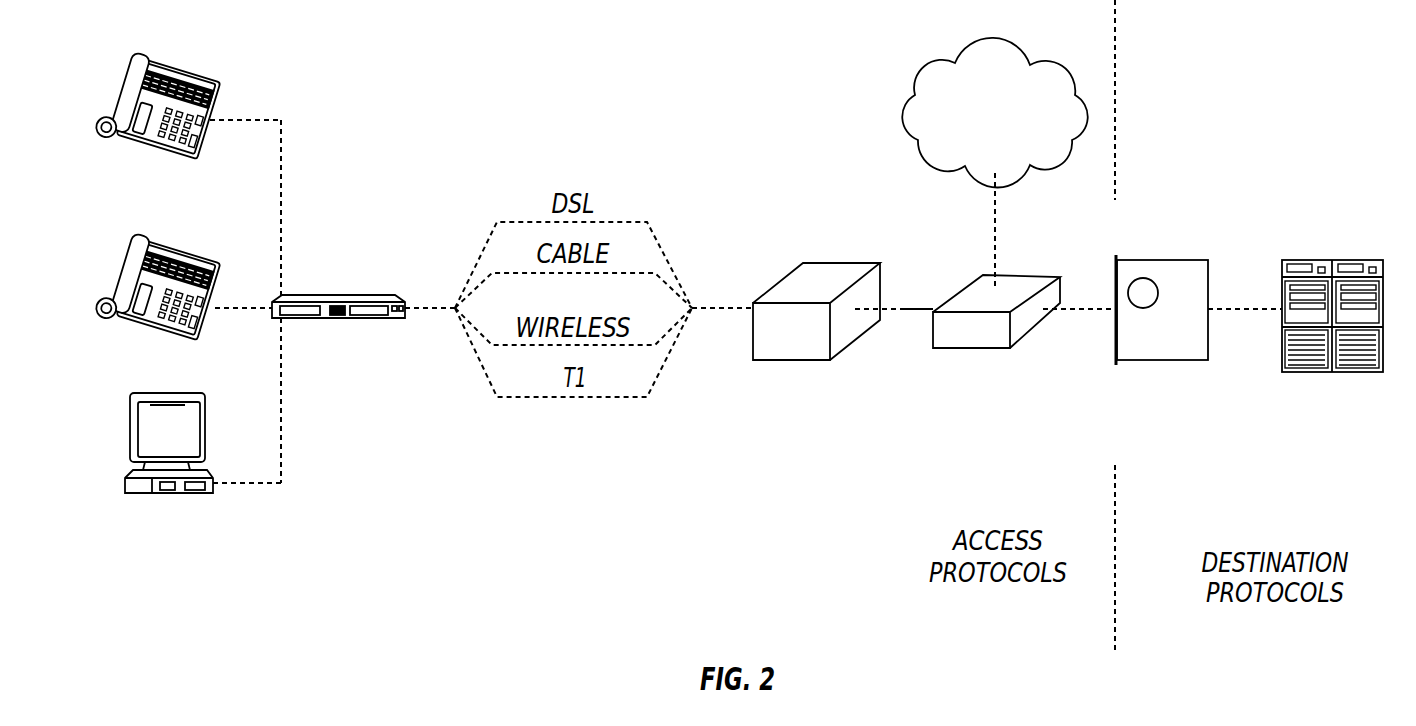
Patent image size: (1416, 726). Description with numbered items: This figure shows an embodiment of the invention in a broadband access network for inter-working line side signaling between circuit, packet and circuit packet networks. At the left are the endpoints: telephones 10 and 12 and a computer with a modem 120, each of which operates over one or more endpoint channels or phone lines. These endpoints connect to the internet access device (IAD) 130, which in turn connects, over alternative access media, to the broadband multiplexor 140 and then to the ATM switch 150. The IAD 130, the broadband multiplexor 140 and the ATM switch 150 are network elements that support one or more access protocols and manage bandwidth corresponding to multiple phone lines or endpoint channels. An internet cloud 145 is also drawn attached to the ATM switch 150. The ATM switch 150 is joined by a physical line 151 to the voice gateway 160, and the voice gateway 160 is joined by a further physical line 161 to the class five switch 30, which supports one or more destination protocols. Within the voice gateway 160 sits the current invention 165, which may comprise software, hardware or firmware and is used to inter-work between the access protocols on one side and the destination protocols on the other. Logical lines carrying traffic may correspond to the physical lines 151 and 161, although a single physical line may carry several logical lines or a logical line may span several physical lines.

The telephone 10 is at (183, 98).
The telephone 12 is at (178, 279).
The computer with a modem 120 is at (179, 427).
The internet access device (IAD) 130 is at (338, 308).
The broadband multiplexor 140 is at (820, 330).
The Internet 145 is at (985, 109).
The ATM switch 150 is at (982, 341).
The physical line 151 is at (1079, 284).
The voice gateway 160 is at (1196, 324).
The physical line 161 is at (1245, 283).
The current invention 165 is at (1164, 313).
The class 5 switch 30 is at (1343, 323).